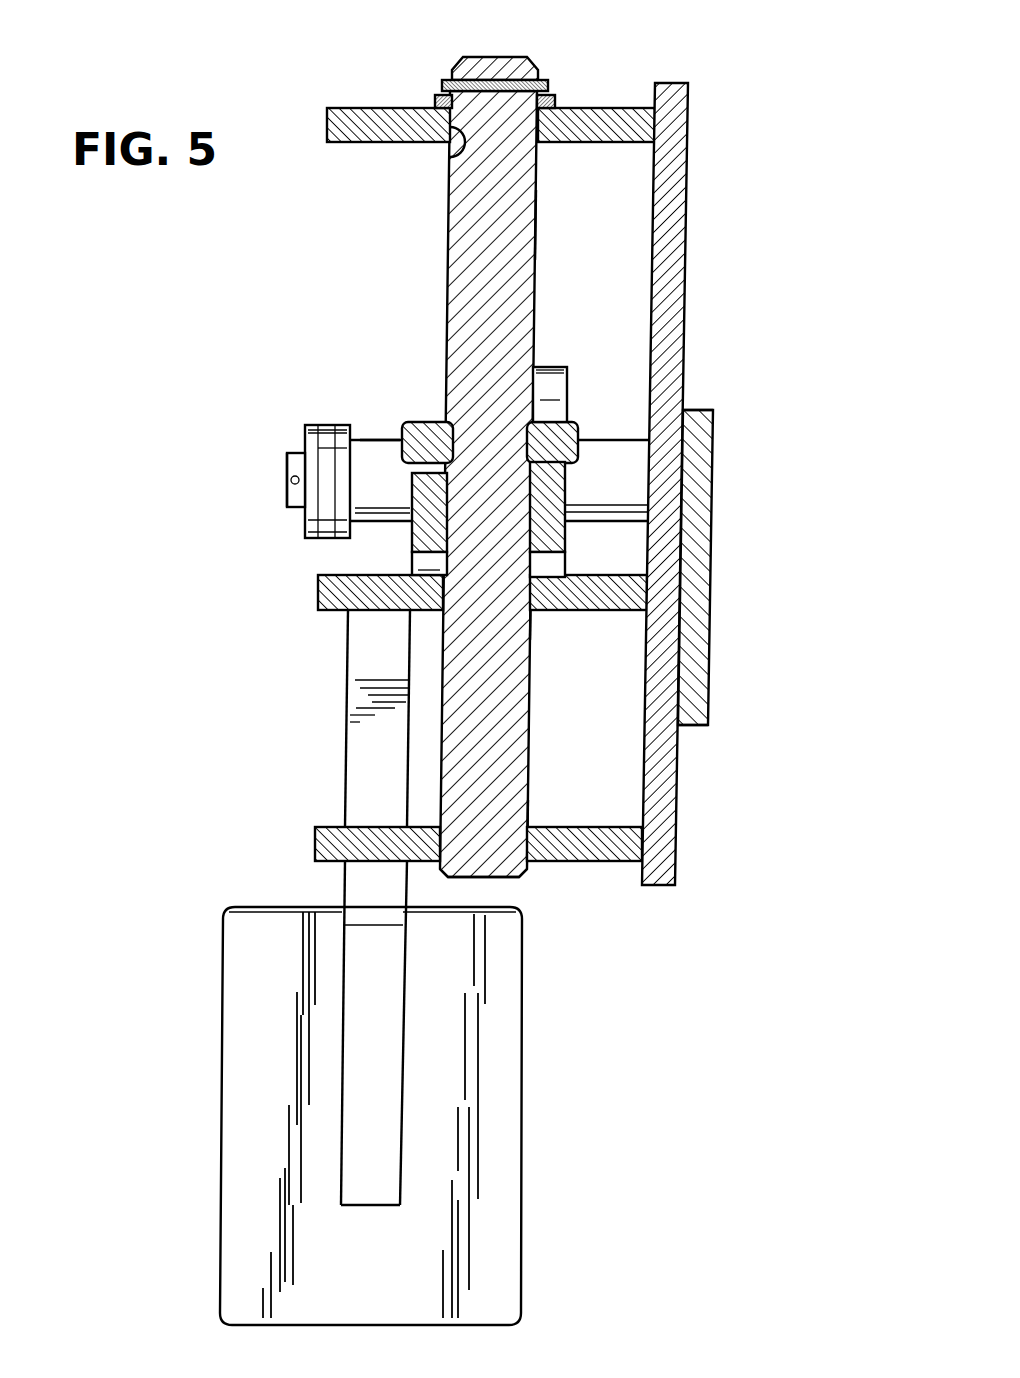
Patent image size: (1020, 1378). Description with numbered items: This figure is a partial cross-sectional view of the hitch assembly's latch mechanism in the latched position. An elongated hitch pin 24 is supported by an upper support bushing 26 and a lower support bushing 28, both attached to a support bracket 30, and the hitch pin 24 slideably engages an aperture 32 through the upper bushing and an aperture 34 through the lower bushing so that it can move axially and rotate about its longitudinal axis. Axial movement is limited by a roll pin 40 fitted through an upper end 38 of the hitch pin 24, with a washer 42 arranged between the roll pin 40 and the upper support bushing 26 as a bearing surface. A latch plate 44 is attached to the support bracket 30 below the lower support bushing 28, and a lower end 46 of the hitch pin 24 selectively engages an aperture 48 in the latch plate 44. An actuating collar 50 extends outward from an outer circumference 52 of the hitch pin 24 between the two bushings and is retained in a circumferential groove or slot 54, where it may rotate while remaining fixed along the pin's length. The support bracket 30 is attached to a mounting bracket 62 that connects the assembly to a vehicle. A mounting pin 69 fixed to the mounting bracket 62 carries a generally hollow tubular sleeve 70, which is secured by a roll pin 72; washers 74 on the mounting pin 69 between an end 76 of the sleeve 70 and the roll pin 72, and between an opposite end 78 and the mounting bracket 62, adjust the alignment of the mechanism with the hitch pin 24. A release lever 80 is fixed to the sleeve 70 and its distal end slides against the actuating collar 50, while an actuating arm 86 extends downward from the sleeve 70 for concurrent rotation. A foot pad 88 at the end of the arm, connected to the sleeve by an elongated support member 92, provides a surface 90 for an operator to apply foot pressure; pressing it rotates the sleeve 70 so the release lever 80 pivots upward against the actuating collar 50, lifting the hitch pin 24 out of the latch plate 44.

The hitch pin 24 is at (450, 276).
The upper support bushing 26 is at (372, 142).
The lower support bushing 28 is at (318, 590).
The support bracket 30 is at (688, 207).
The aperture 32 is at (473, 147).
The aperture 34 is at (530, 598).
The upper end 38 is at (500, 56).
The roll pin 40 is at (550, 88).
The washer 42 is at (435, 100).
The latch plate 44 is at (316, 855).
The lower end 46 is at (500, 877).
The aperture 48 is at (527, 842).
The actuating collar 50 is at (425, 422).
The outer circumference 52 is at (537, 225).
The circumferential groove or slot 54 is at (535, 438).
The mounting bracket 62 is at (747, 448).
The mounting pin 69 is at (287, 470).
The tubular sleeve 70 is at (628, 440).
The roll pin 72 is at (294, 484).
The washers 74 is at (318, 425).
The end of sleeve 76 is at (365, 440).
The opposite end of sleeve 78 is at (738, 567).
The release lever 80 is at (567, 375).
The actuating arm 86 is at (362, 672).
The foot pad 88 is at (522, 1125).
The surface 90 is at (745, 638).
The support member 92 is at (348, 737).